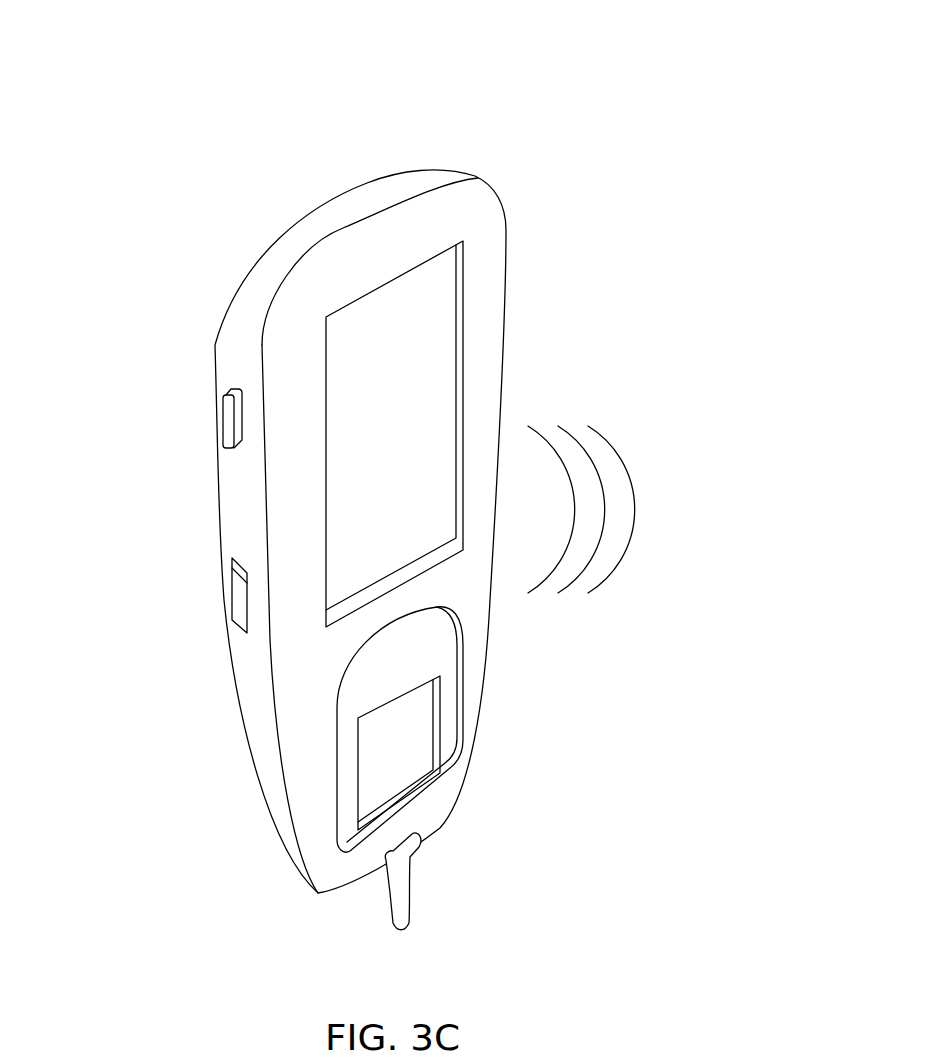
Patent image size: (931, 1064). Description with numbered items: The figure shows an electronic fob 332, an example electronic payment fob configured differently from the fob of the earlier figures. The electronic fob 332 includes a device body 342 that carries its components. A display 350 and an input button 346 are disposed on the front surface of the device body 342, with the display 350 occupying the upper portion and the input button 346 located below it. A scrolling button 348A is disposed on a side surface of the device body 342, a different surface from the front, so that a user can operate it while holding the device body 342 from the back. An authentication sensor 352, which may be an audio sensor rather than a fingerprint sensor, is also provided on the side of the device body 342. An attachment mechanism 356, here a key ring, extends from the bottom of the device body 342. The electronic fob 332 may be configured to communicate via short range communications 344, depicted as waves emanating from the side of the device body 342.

The electronic fob 332 is at (341, 446).
The device body 342 is at (280, 238).
The short range communications 344 is at (627, 555).
The input button 346 is at (413, 745).
The scrolling button 348A is at (232, 427).
The display 350 is at (426, 356).
The authentication sensor 352 is at (244, 600).
The attachment mechanism 356 is at (413, 898).